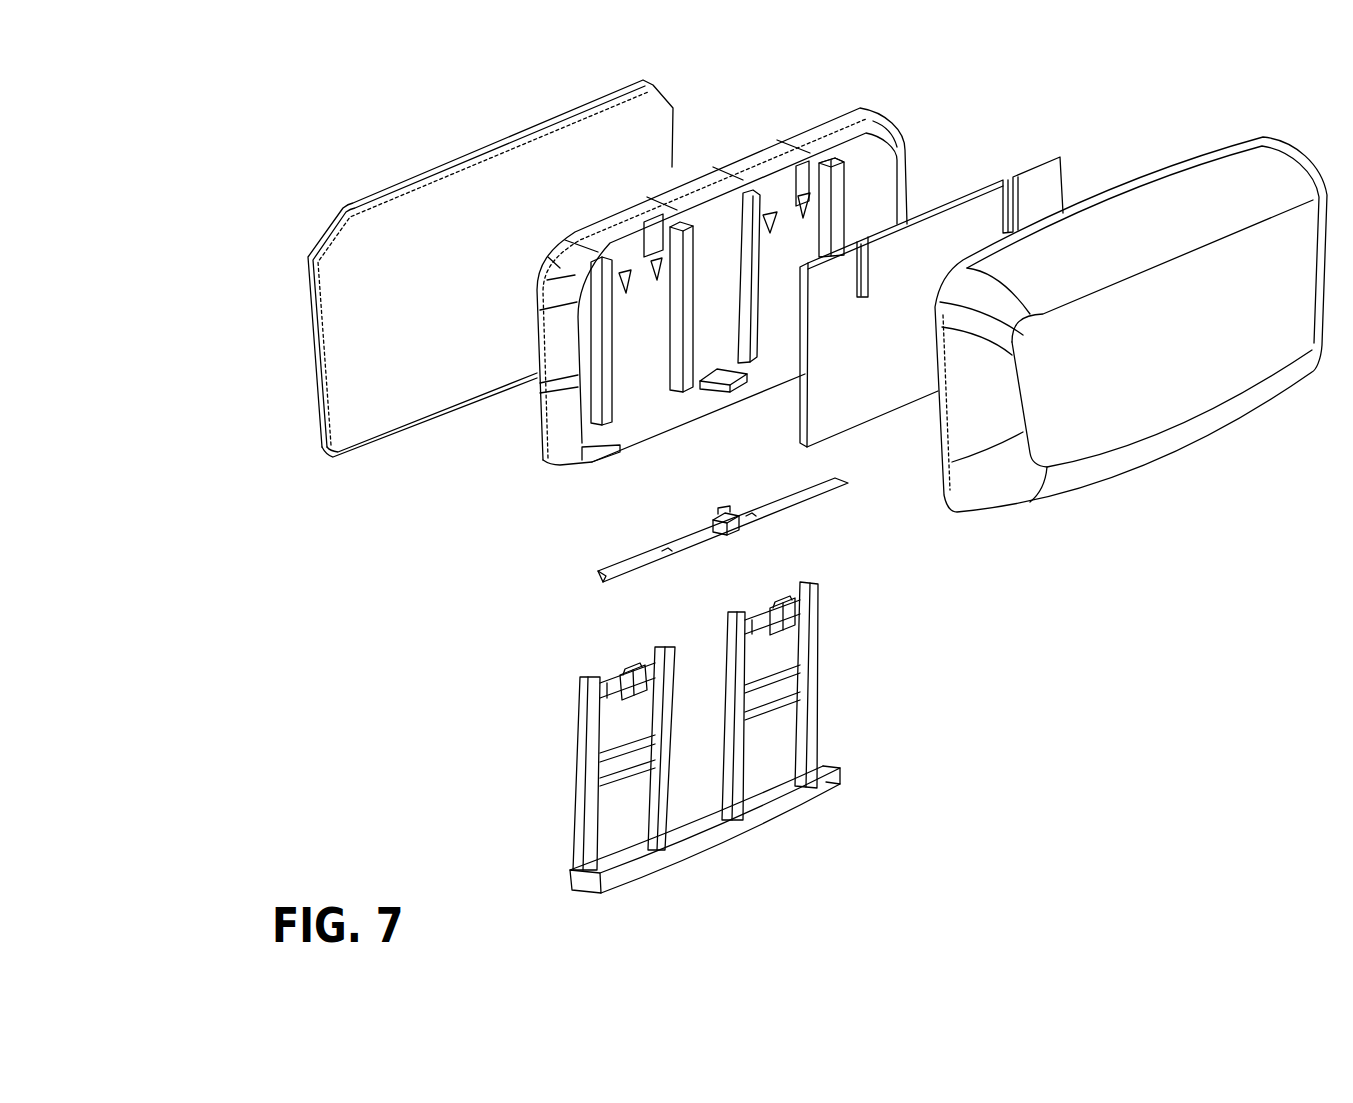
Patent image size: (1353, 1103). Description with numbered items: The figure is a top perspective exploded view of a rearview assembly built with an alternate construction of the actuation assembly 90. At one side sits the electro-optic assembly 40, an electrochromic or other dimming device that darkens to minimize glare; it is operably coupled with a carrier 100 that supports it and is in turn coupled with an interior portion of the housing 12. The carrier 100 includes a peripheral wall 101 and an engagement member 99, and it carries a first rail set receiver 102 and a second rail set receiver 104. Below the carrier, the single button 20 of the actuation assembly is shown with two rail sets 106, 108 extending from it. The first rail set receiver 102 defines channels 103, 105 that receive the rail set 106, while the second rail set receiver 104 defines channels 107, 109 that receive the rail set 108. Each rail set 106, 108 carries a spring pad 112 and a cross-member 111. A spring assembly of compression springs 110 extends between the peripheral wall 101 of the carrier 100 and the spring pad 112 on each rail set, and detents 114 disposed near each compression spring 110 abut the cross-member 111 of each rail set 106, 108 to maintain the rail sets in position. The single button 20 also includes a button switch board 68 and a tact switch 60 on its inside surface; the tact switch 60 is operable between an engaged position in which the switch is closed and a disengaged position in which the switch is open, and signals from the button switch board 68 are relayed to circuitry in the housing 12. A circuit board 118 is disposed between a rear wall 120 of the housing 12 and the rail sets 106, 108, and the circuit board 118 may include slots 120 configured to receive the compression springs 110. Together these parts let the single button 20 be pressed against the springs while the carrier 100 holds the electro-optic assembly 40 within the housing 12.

The housing 12 is at (1183, 200).
The single button 20 is at (733, 833).
The electro-optic assembly 40 is at (352, 240).
The tact switch 60 is at (730, 535).
The button switch board 68 is at (650, 560).
The actuation assembly 90 is at (343, 697).
The engagement member 99 is at (720, 384).
The carrier 100 is at (600, 433).
The peripheral wall 101 is at (563, 327).
The first rail set receiver 102 is at (683, 360).
The channel 103 is at (606, 256).
The second rail set receiver 104 is at (845, 227).
The channel 105 is at (676, 274).
The rail set 106 is at (665, 760).
The channel 107 is at (755, 192).
The rail set 108 is at (738, 735).
The channel 109 is at (848, 172).
The compression spring 110 is at (656, 234).
The cross-member 111 is at (612, 684).
The spring pad 112 is at (633, 672).
The detent 114 is at (623, 275).
The circuit board 118 is at (900, 369).
The rear wall 120 is at (863, 267).